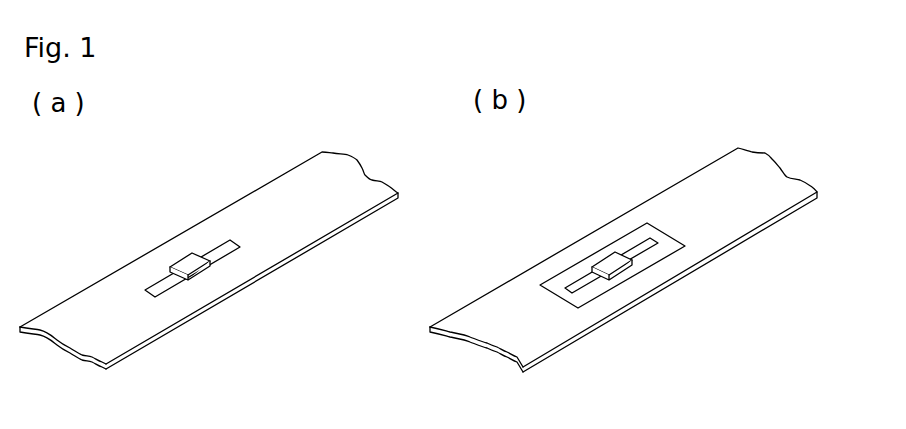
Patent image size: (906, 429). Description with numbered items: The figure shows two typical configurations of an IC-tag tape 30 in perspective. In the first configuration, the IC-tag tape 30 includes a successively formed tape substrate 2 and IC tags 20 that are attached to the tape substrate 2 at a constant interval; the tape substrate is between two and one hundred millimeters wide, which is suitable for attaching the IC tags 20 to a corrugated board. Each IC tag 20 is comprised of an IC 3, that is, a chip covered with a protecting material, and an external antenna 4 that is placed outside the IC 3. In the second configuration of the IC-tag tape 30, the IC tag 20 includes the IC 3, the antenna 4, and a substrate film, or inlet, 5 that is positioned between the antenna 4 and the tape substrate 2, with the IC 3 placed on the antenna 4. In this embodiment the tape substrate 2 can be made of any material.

In FIG. 1a, the tape substrate 2 is at (300, 230).
In FIG. 1b, the tape substrate 2 is at (745, 210).
In FIG. 1a, the IC 3 is at (193, 272).
In FIG. 1b, the IC 3 is at (620, 277).
In FIG. 1a, the external antenna 4 is at (233, 250).
In FIG. 1b, the external antenna 4 is at (652, 245).
In FIG. 1b, the substrate film (inlet) 5 is at (668, 248).
In FIG. 1a, the IC tag 20 is at (200, 275).
In FIG. 1b, the IC tag 20 is at (584, 283).
In FIG. 1a, the IC-tag tape 30 is at (229, 260).
In FIG. 1b, the IC-tag tape 30 is at (636, 258).